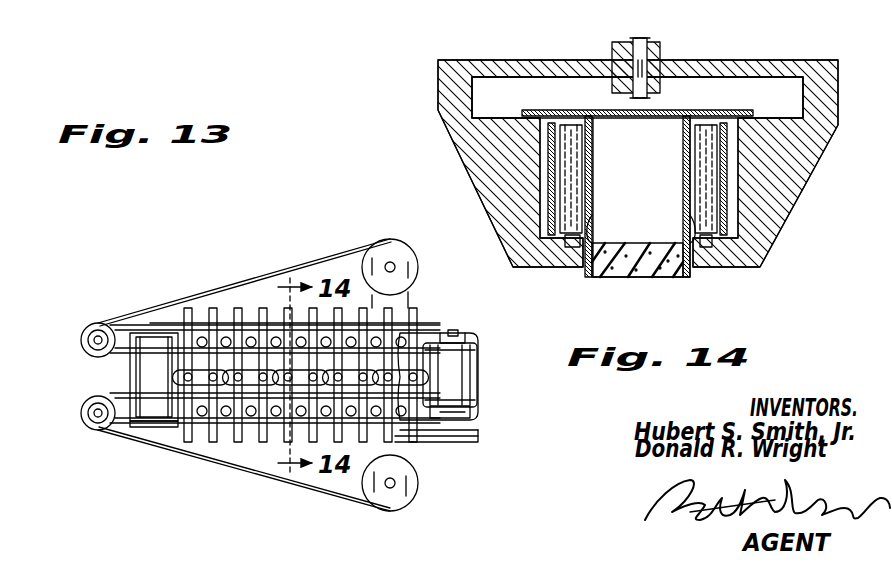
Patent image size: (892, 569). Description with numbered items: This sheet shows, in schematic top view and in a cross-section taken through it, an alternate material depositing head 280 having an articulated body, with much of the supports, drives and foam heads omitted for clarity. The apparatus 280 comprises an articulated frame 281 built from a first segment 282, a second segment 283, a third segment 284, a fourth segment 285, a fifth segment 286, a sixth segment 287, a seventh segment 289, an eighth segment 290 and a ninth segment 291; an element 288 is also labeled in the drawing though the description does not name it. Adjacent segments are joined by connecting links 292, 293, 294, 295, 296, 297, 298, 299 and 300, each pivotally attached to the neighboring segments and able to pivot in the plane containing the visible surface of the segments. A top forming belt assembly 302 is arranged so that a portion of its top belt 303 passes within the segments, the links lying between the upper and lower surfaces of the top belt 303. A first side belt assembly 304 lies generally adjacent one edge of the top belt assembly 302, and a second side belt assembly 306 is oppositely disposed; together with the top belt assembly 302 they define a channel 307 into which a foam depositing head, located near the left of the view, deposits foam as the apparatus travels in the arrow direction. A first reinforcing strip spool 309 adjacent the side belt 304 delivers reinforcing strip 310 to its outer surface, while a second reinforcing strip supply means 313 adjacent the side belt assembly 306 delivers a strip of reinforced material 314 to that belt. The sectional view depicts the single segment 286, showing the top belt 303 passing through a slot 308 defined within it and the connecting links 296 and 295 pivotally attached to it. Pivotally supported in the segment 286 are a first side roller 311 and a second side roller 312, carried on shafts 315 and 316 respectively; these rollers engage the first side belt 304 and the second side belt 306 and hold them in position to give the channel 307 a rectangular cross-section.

In FIG. 13, the forming apparatus 280 is at (127, 283).
In FIG. 13, the articulated frame 281 is at (230, 306).
In FIG. 13, the first segment 282 is at (182, 420).
In FIG. 13, the second segment 283 is at (215, 438).
In FIG. 13, the third segment 284 is at (232, 440).
In FIG. 13, the fourth segment 285 is at (262, 438).
In FIG. 13, the fifth segment 286 is at (283, 440).
In FIG. 14, the fifth segment 286 is at (462, 60).
In FIG. 13, the sixth segment 287 is at (290, 307).
In FIG. 13, the lower belt 288 is at (377, 438).
In FIG. 13, the seventh segment 289 is at (373, 443).
In FIG. 13, the eighth segment 290 is at (423, 440).
In FIG. 13, the ninth segment 291 is at (417, 432).
In FIG. 13, the connecting link 292 is at (197, 307).
In FIG. 13, the connecting link 293 is at (200, 307).
In FIG. 13, the connecting link 294 is at (250, 307).
In FIG. 13, the connecting link 295 is at (260, 307).
In FIG. 14, the connecting link 295 is at (660, 88).
In FIG. 13, the connecting link 296 is at (273, 307).
In FIG. 14, the connecting link 296 is at (660, 45).
In FIG. 13, the connecting link 297 is at (357, 312).
In FIG. 13, the connecting link 298 is at (387, 313).
In FIG. 13, the connecting link 299 is at (450, 363).
In FIG. 13, the connecting link 300 is at (497, 387).
In FIG. 13, the top forming belt assembly 302 is at (147, 431).
In FIG. 13, the top belt 303 is at (193, 327).
In FIG. 14, the top belt 303 is at (560, 110).
In FIG. 13, the first side belt assembly 304 is at (150, 433).
In FIG. 14, the first side belt assembly 304 is at (683, 144).
In FIG. 13, the second side belt assembly 306 is at (98, 322).
In FIG. 14, the second side belt assembly 306 is at (593, 209).
In FIG. 13, the channel 307 is at (118, 389).
In FIG. 14, the channel 307 is at (650, 175).
In FIG. 14, the slot 308 is at (780, 108).
In FIG. 13, the first reinforcing strip spool 309 is at (400, 497).
In FIG. 13, the reinforcing strip 310 is at (93, 421).
In FIG. 14, the reinforcing strip 310 is at (686, 223).
In FIG. 14, the first side roller 311 is at (570, 185).
In FIG. 14, the second side roller 312 is at (715, 206).
In FIG. 13, the second reinforcing strip supply means 313 is at (393, 243).
In FIG. 13, the strip of reinforced material 314 is at (358, 250).
In FIG. 14, the strip of reinforced material 314 is at (590, 255).
In FIG. 14, the shaft 315 is at (560, 248).
In FIG. 14, the shaft 316 is at (706, 247).